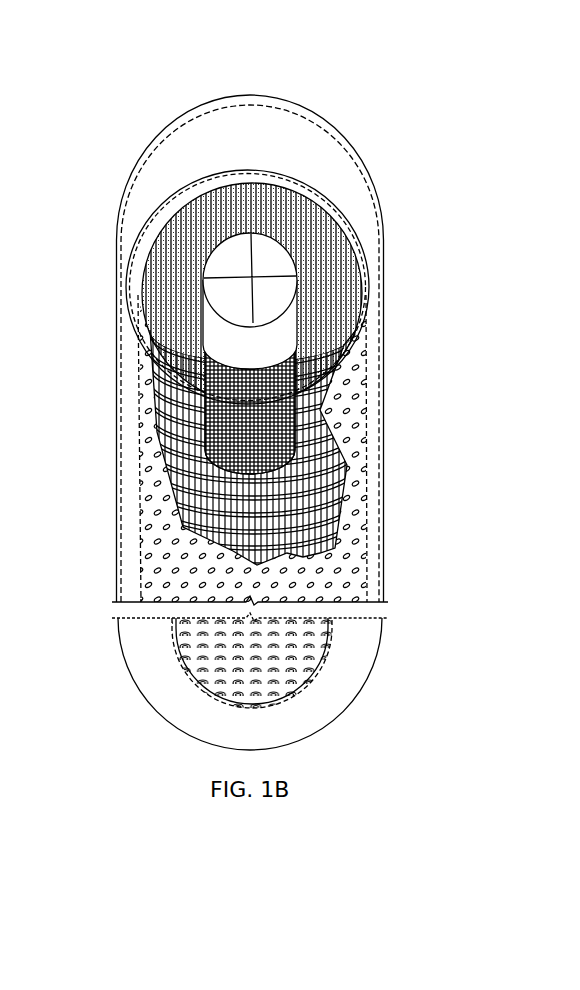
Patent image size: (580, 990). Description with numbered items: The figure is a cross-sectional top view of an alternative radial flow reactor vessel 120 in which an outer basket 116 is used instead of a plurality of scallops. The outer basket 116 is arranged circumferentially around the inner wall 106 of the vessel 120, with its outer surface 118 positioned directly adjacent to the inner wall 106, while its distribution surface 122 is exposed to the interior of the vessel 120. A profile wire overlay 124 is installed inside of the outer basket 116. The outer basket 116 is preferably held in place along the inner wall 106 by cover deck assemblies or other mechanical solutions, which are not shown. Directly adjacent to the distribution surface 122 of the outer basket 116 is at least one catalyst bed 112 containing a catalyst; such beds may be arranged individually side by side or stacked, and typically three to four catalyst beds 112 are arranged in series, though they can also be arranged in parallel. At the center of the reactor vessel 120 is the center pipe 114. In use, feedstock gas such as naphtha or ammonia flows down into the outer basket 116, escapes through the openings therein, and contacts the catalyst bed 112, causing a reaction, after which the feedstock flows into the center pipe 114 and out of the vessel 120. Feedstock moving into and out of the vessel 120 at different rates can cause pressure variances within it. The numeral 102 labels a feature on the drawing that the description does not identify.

The reactor vessel 120 is at (265, 53).
The distribution surface 122 is at (280, 213).
The inner wall 106 is at (150, 186).
The center pipe 114 is at (232, 293).
The catalyst bed 112 is at (347, 273).
The outer surface 118 is at (154, 467).
The profile wire overlay 124 is at (303, 434).
The outer basket 116 is at (158, 528).
The break line / housing section 102 is at (116, 580).